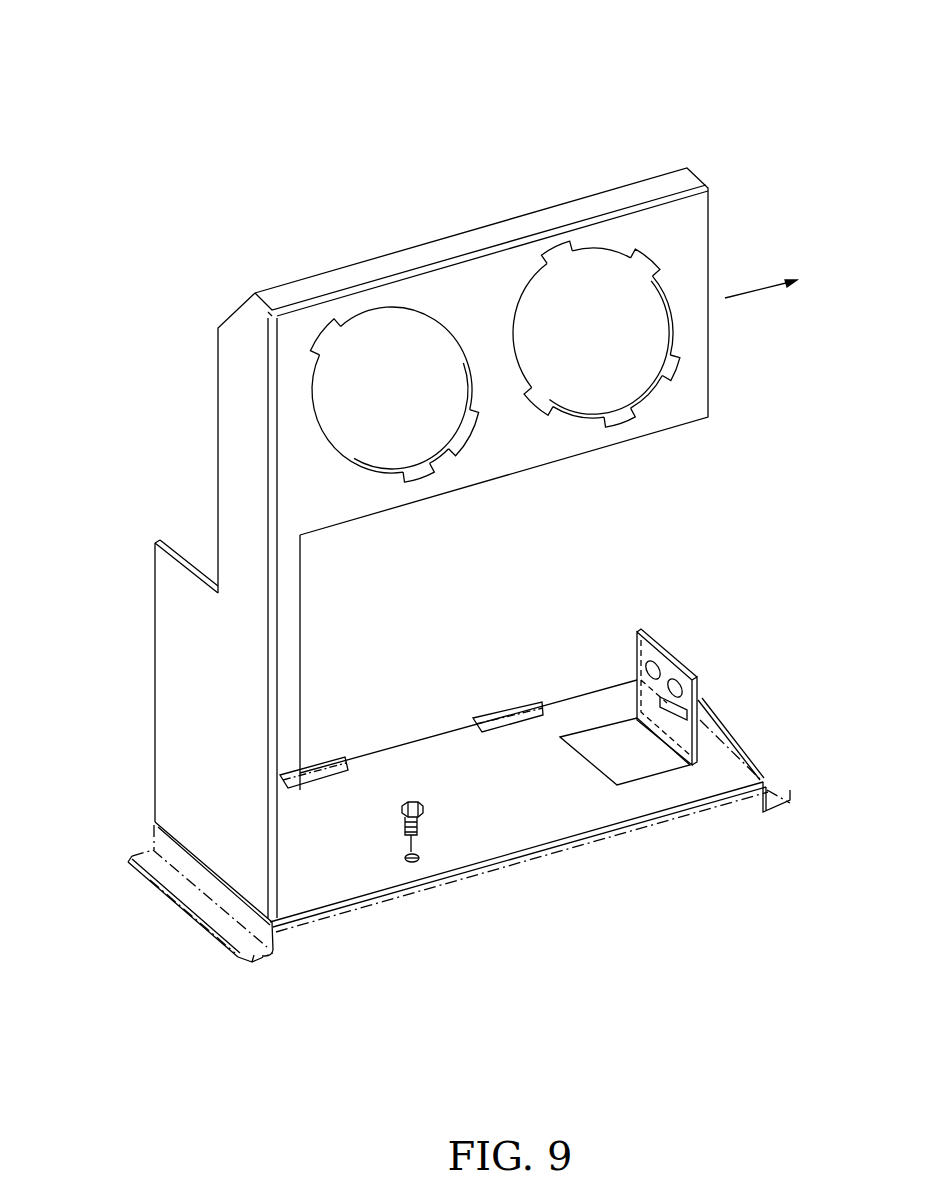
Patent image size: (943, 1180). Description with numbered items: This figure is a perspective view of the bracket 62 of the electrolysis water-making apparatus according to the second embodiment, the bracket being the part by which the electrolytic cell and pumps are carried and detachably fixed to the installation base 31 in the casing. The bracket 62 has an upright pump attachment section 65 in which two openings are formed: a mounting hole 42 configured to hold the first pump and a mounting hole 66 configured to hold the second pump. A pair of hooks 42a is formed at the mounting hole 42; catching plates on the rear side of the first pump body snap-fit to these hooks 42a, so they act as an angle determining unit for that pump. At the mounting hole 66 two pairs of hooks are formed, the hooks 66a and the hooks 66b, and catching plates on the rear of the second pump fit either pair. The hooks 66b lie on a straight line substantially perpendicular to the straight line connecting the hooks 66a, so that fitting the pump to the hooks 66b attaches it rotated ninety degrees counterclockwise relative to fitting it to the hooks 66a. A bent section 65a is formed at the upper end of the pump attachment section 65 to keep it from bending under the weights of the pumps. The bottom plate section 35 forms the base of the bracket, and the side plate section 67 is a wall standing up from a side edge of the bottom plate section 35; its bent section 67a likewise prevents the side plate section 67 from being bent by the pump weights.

The bracket 62 is at (730, 158).
The pump attachment section 65 is at (497, 278).
The bent section 65a is at (372, 272).
The mounting hole 66 is at (618, 393).
The hooks 66a is at (573, 280).
The hooks 66b is at (627, 250).
The mounting hole 42 is at (420, 452).
The hooks 42a is at (367, 337).
The side plate section 67 is at (193, 694).
The bent section 67a is at (287, 832).
The installation base 31 is at (198, 907).
The bottom plate section 35 is at (535, 815).